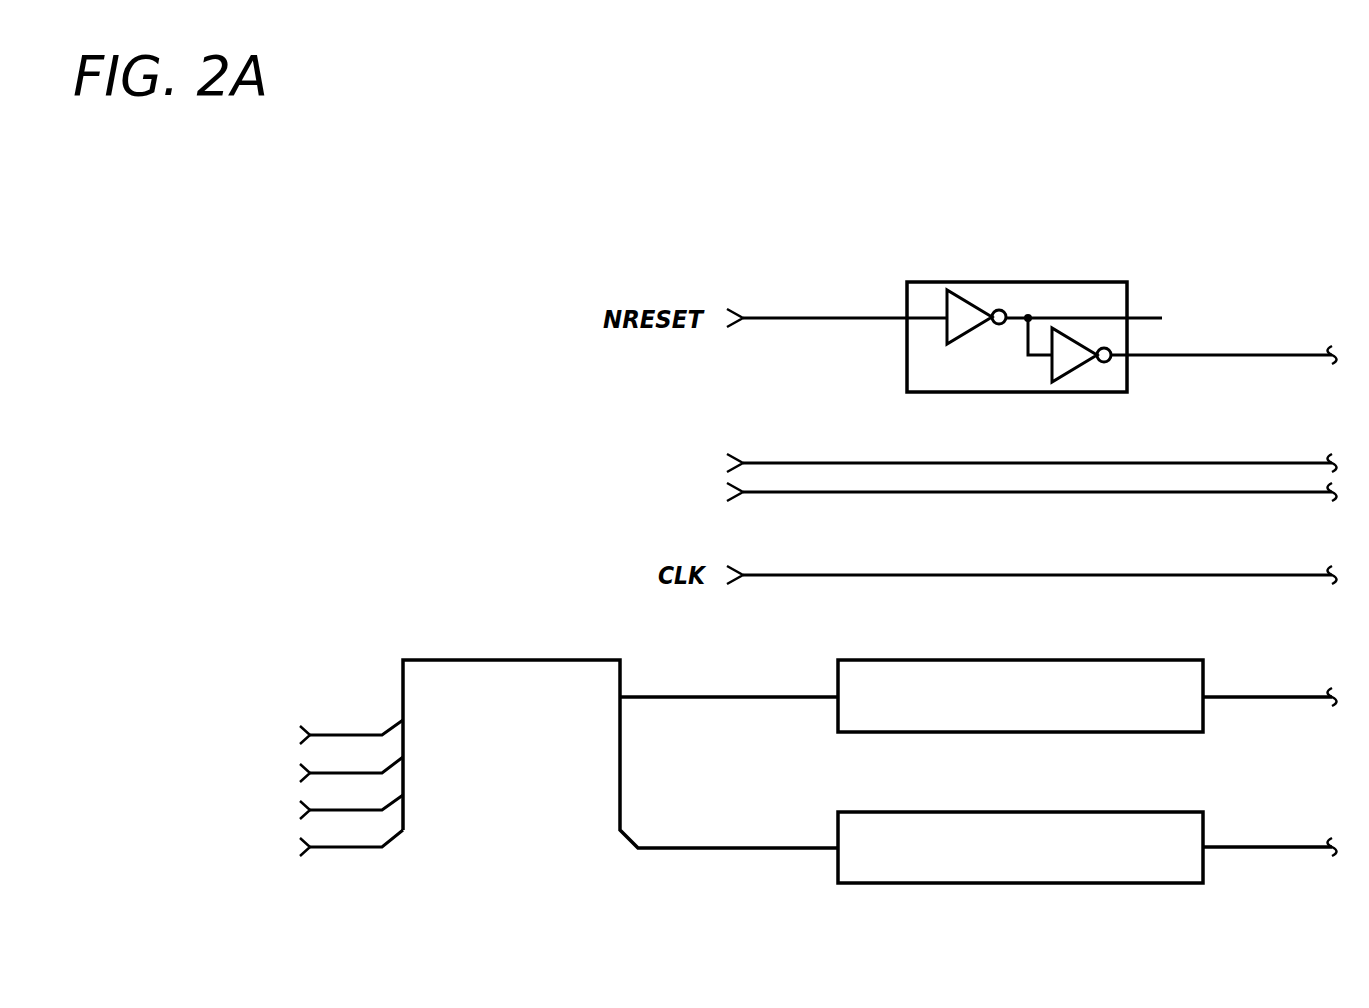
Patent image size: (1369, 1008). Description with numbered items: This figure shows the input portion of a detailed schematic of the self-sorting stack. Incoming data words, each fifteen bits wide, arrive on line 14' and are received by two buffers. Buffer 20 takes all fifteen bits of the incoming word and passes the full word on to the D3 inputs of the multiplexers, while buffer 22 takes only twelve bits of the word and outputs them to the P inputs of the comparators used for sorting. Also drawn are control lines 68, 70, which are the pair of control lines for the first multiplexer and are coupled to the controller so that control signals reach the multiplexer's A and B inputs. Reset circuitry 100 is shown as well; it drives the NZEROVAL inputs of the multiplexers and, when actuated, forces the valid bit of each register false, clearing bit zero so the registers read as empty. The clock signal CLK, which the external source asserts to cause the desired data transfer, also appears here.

The reset circuitry 100 is at (1050, 288).
The control line 68 is at (845, 437).
The control line 70 is at (828, 493).
The line 14' is at (494, 718).
The buffer 20 is at (1192, 673).
The buffer 22 is at (1190, 827).